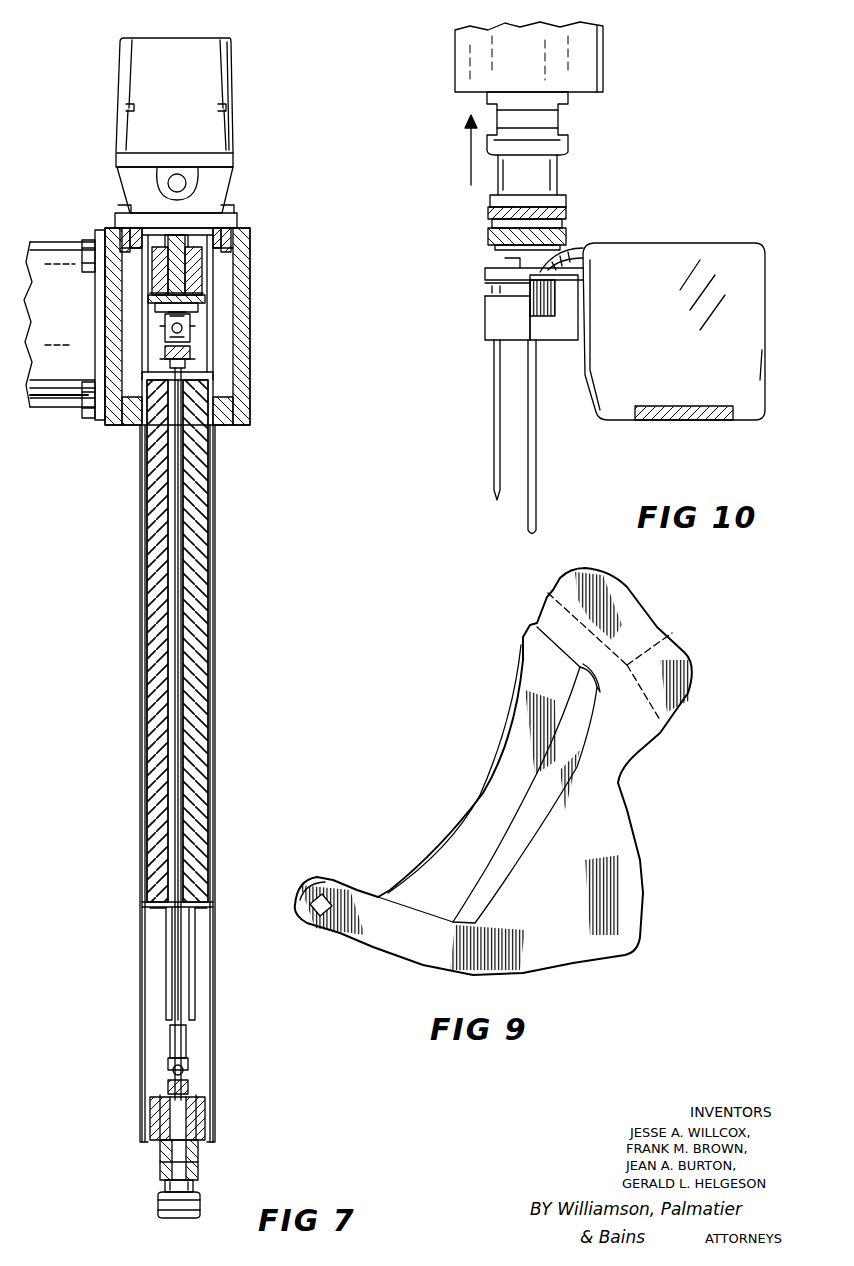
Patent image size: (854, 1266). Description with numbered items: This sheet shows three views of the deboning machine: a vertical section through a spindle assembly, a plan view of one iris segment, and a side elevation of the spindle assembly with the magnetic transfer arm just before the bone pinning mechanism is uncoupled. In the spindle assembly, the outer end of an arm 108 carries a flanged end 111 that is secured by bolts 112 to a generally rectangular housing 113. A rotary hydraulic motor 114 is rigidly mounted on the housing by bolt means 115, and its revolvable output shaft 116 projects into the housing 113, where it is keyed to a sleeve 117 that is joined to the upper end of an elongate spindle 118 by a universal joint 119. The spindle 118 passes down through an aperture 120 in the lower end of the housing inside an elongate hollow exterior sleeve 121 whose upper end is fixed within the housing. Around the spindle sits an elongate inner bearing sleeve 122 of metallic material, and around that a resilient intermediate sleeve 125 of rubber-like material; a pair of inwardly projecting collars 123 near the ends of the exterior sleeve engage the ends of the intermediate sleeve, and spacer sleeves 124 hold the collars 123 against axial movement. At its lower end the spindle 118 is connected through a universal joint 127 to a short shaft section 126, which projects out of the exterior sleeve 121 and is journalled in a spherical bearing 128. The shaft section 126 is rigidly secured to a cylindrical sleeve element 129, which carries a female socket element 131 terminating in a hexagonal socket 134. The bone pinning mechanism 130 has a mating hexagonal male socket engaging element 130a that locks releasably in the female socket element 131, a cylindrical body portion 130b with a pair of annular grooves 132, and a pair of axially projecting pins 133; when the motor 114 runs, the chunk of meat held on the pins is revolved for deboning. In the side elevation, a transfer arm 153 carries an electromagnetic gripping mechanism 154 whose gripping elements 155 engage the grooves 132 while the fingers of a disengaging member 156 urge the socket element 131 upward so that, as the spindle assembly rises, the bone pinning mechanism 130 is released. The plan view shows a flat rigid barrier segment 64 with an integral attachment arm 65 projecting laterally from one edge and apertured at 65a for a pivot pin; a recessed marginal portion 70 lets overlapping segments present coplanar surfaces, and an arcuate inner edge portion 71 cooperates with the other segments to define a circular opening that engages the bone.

In FIG. 7, the rotary hydraulic motor 114 is at (230, 52).
In FIG. 7, the bolt means 115 is at (121, 205).
In FIG. 7, the flanged end 111 is at (99, 233).
In FIG. 7, the bolts 112 is at (90, 272).
In FIG. 7, the arm 108 is at (72, 415).
In FIG. 7, the housing 113 is at (250, 322).
In FIG. 7, the output shaft 116 is at (185, 265).
In FIG. 7, the sleeve 117 is at (198, 290).
In FIG. 7, the spacer sleeves 124 is at (200, 336).
In FIG. 7, the universal joint 119 is at (188, 350).
In FIG. 7, the collars 123 is at (200, 380).
In FIG. 7, the aperture 120 is at (200, 427).
In FIG. 7, the spindle 118 is at (178, 562).
In FIG. 7, the exterior sleeve 121 is at (140, 628).
In FIG. 10, the exterior sleeve 121 is at (605, 46).
In FIG. 7, the intermediate sleeve 125 is at (198, 684).
In FIG. 7, the inner bearing sleeve 122 is at (168, 955).
In FIG. 7, the universal joint 127 is at (190, 1070).
In FIG. 7, the short shaft section 126 is at (165, 1108).
In FIG. 7, the spherical bearing 128 is at (200, 1108).
In FIG. 7, the sleeve element 129 is at (200, 1166).
In FIG. 10, the sleeve element 129 is at (568, 126).
In FIG. 7, the hexagonal socket 134 is at (195, 1184).
In FIG. 7, the female socket element 131 is at (160, 1203).
In FIG. 10, the female socket element 131 is at (492, 203).
In FIG. 10, the bone pinning mechanism 130 is at (480, 343).
In FIG. 10, the male socket engaging element 130a is at (505, 262).
In FIG. 10, the body portion 130b is at (485, 320).
In FIG. 10, the annular grooves 132 is at (490, 289).
In FIG. 10, the pins 133 is at (494, 424).
In FIG. 10, the transfer arm 153 is at (698, 420).
In FIG. 10, the electromagnetic gripping mechanism 154 is at (728, 245).
In FIG. 10, the electromagnetic gripping elements 155 is at (548, 325).
In FIG. 10, the disengaging member 156 is at (585, 255).
In FIG. 9, the barrier segment 64 is at (640, 835).
In FIG. 9, the attachment arm 65 is at (322, 935).
In FIG. 9, the aperture 65a is at (322, 898).
In FIG. 9, the recessed marginal portion 70 is at (675, 636).
In FIG. 9, the inner edge portion 71 is at (545, 592).